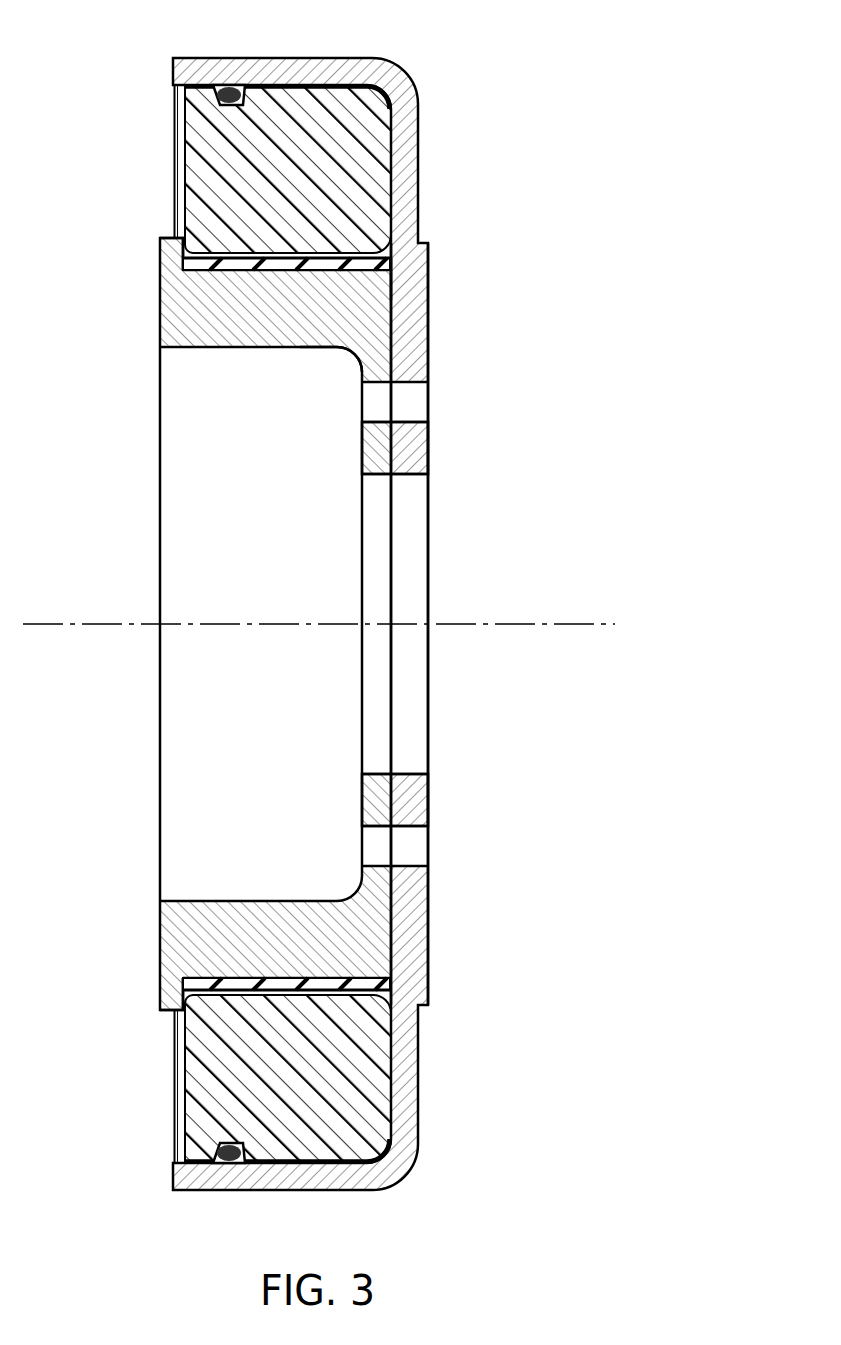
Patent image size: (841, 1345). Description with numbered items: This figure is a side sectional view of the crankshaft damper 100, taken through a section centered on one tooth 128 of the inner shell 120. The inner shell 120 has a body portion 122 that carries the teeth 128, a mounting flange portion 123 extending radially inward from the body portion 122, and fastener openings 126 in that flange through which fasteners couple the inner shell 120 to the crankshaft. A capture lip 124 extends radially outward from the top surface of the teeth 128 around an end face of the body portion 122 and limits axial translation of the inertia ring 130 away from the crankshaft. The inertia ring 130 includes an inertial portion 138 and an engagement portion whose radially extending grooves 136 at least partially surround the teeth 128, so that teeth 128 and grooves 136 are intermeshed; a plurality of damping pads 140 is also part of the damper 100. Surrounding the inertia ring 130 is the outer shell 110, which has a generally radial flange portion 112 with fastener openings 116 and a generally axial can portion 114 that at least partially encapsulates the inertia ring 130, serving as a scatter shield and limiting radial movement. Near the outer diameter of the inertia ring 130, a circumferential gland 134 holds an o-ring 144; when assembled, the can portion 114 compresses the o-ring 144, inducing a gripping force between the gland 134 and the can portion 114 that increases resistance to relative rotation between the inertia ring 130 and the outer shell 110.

The damper 100 is at (543, 56).
The outer shell 110 is at (315, 624).
The flange portion 112 is at (430, 357).
The can portion 114 is at (318, 58).
The fastener openings 116 is at (430, 402).
The inner shell 120 is at (217, 361).
The body portion 122 is at (300, 348).
The mounting flange portion 123 is at (362, 456).
The capture lip 124 is at (160, 246).
The fastener openings 126 is at (362, 412).
The teeth 128 is at (363, 272).
The inertia ring 130 is at (250, 589).
The gland 134 is at (220, 98).
The grooves 136 is at (336, 257).
The inertial portion 138 is at (376, 100).
The damping pads 140 is at (265, 243).
The o-ring 144 is at (228, 90).